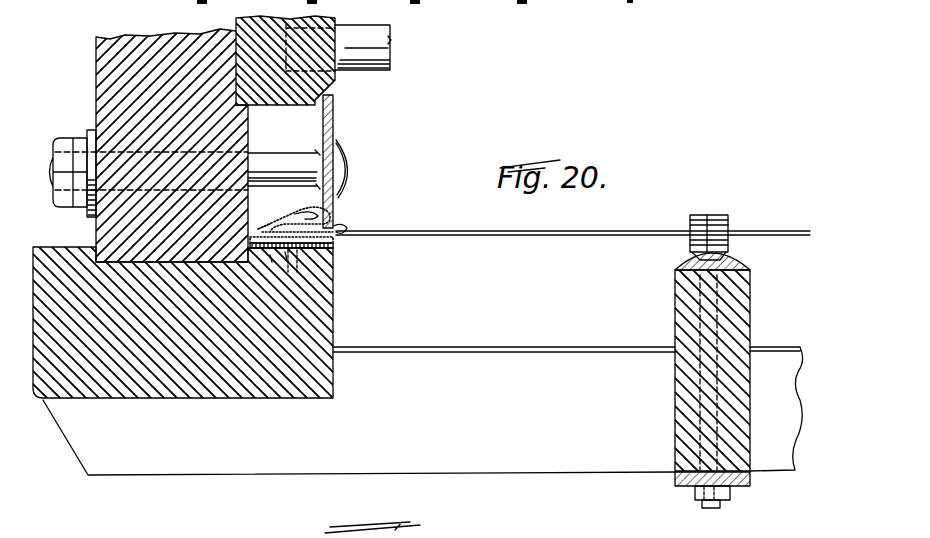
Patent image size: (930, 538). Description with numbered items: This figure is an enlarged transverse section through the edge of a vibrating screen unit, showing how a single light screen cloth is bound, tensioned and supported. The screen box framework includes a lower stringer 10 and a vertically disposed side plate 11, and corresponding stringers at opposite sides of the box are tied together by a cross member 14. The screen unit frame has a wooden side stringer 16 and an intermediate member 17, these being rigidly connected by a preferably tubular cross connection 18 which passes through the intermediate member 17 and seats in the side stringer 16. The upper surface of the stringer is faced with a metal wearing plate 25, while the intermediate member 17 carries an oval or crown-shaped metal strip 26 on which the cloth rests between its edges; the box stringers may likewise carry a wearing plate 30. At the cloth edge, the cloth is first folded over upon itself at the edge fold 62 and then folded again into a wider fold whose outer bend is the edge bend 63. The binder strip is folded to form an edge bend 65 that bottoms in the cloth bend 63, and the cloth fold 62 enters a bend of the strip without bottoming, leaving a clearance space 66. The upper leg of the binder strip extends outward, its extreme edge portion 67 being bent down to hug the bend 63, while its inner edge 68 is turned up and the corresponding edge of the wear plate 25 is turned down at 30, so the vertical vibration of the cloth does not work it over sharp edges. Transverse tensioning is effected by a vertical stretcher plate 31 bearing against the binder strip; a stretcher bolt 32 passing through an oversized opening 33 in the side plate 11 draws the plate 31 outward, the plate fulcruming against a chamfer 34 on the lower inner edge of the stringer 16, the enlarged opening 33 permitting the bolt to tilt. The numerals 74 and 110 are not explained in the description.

The lower stringer 10 is at (318, 321).
The side plate 11 is at (95, 76).
The cross member 14 is at (453, 465).
The side stringer 16 is at (236, 20).
The intermediate member 17 is at (752, 330).
The cross connection 18 is at (395, 62).
The wearing plate 25 is at (330, 263).
The metal strip 26 is at (750, 264).
The wearing plate 30 is at (335, 246).
The stretcher plate 31 is at (335, 118).
The stretcher bolt 32 is at (284, 162).
The opening 33 is at (118, 147).
The chamfer 34 is at (333, 88).
The edge fold 62 is at (280, 214).
The edge bend 63 is at (250, 240).
The edge bend 65 is at (285, 253).
The clearance space 66 is at (342, 206).
The edge portion 67 is at (262, 223).
The inner edge 68 is at (349, 228).
The rivet 74 is at (270, 256).
The nut 110 is at (730, 218).